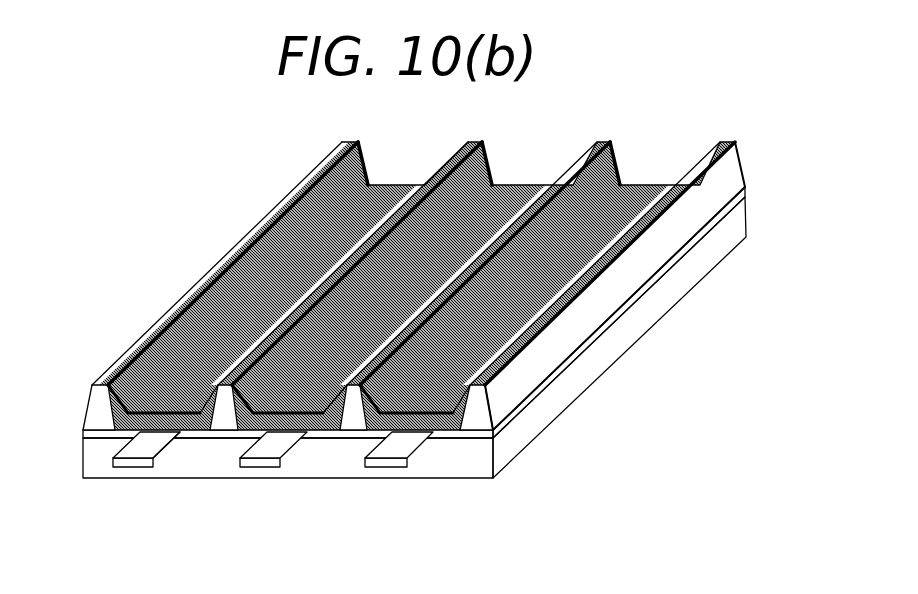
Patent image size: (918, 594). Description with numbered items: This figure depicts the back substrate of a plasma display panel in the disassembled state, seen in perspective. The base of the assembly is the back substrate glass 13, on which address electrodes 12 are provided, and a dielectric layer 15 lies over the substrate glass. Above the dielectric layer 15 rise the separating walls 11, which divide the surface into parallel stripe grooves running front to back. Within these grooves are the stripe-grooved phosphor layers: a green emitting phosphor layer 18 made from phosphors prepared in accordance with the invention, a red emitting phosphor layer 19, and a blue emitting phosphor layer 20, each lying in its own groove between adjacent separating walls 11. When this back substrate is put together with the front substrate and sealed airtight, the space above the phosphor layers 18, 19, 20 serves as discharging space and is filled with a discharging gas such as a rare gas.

The separating wall 11 is at (670, 238).
The address electrode 12 is at (393, 448).
The back substrate glass 13 is at (528, 425).
The dielectric layer 15 is at (583, 347).
The green emitting phosphor layer 18 is at (203, 430).
The red emitting phosphor layer 19 is at (327, 430).
The blue emitting phosphor layer 20 is at (455, 432).